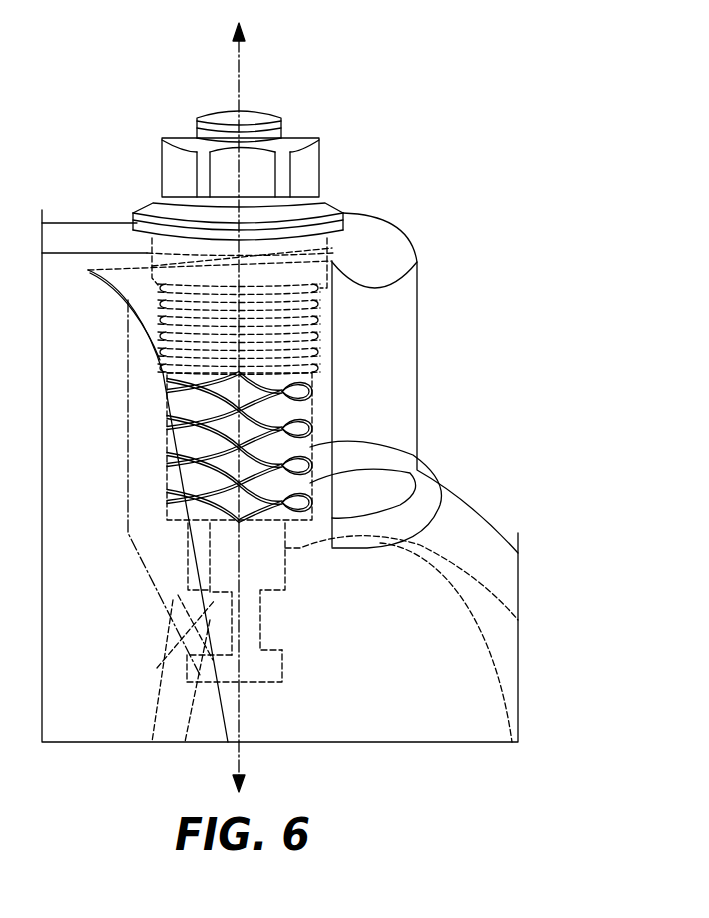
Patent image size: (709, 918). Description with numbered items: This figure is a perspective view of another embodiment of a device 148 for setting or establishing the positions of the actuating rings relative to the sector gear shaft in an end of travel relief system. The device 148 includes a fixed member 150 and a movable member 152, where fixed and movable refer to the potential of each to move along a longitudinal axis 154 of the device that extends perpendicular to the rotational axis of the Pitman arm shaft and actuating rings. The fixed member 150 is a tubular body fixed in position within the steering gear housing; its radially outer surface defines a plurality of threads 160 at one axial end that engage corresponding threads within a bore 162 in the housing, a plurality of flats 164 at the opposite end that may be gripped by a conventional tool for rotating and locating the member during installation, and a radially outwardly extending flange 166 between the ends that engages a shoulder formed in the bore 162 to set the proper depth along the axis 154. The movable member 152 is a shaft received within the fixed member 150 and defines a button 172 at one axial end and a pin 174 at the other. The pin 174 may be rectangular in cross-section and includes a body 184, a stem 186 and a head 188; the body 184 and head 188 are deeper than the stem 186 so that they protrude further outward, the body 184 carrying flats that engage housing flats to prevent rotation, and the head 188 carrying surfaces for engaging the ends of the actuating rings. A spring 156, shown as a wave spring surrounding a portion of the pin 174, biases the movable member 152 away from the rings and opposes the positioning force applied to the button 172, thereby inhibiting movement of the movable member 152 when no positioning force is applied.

The device 148 is at (505, 296).
The fixed member 150 is at (333, 179).
The movable member 152 is at (278, 557).
The longitudinal axis 154 is at (240, 68).
The spring 156 is at (168, 459).
The threads 160 is at (155, 333).
The bore 162 is at (314, 353).
The flats 164 is at (177, 182).
The flange 166 is at (153, 230).
The button 172 is at (217, 108).
The pin 174 is at (268, 667).
The body 184 is at (192, 573).
The stem 186 is at (230, 628).
The head 188 is at (195, 670).